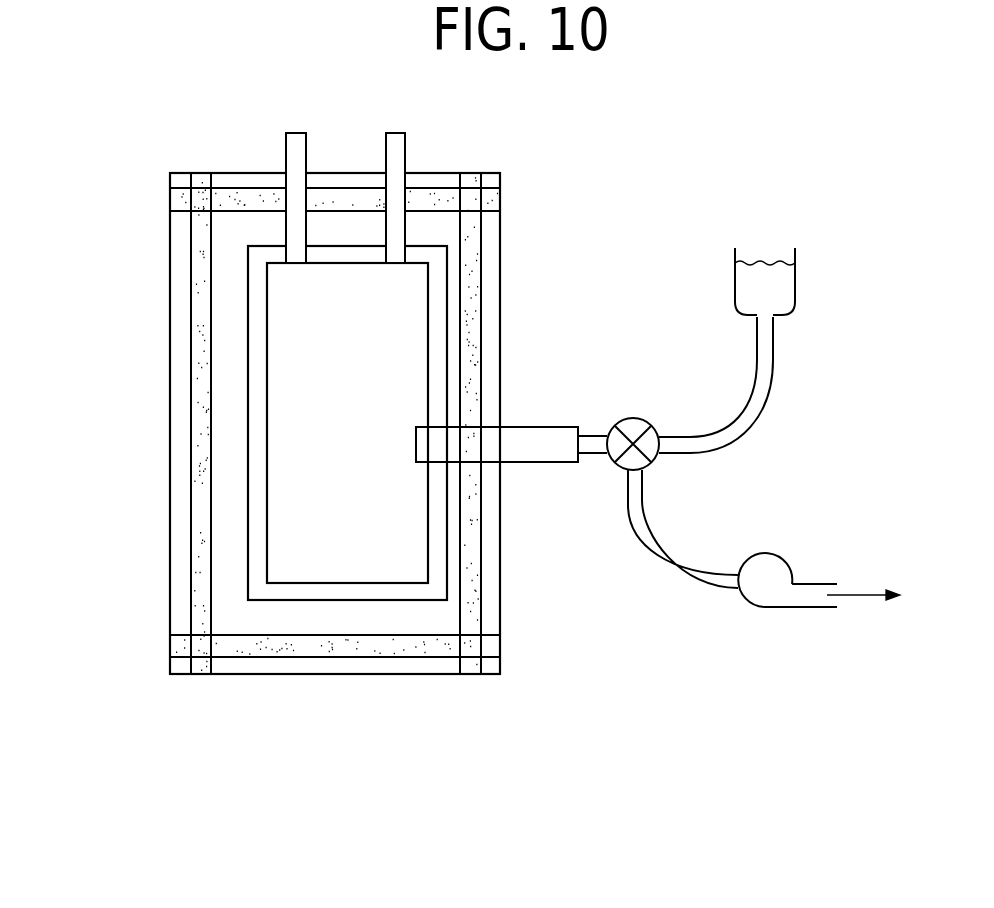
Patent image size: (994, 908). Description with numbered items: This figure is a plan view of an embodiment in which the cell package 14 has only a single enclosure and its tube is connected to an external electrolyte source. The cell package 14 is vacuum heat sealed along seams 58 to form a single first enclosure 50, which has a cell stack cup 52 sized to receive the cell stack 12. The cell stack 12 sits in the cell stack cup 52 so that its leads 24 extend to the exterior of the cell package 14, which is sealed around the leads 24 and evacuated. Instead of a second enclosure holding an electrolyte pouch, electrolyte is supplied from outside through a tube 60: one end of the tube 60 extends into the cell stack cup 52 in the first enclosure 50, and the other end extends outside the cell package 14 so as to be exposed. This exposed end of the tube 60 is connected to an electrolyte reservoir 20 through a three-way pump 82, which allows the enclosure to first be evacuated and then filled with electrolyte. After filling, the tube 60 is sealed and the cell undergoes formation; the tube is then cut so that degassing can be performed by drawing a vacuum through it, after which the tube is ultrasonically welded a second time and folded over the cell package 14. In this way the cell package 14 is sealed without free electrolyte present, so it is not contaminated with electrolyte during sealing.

The cell stack 12 is at (333, 559).
The cell package 14 is at (284, 447).
The reservoir 20 is at (765, 270).
The leads 24 is at (395, 147).
The first enclosure 50 is at (217, 407).
The cell stack cup 52 is at (423, 592).
The seams 58 is at (200, 303).
The tube 60 is at (560, 438).
The three-way pump 82 is at (637, 423).